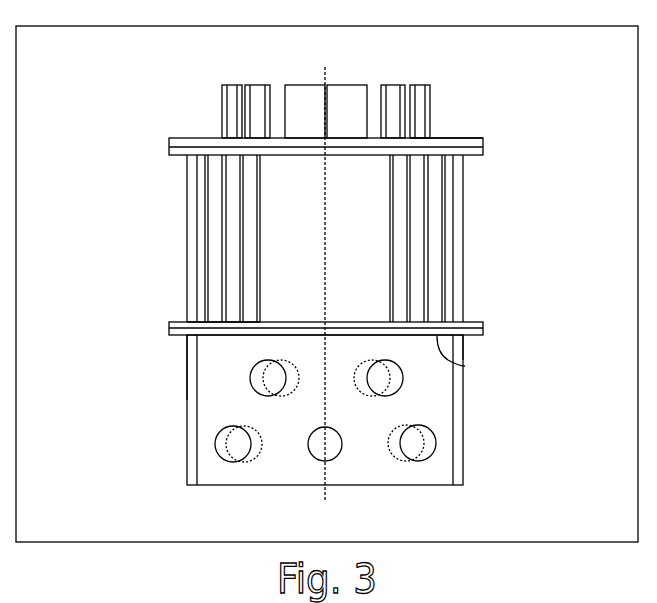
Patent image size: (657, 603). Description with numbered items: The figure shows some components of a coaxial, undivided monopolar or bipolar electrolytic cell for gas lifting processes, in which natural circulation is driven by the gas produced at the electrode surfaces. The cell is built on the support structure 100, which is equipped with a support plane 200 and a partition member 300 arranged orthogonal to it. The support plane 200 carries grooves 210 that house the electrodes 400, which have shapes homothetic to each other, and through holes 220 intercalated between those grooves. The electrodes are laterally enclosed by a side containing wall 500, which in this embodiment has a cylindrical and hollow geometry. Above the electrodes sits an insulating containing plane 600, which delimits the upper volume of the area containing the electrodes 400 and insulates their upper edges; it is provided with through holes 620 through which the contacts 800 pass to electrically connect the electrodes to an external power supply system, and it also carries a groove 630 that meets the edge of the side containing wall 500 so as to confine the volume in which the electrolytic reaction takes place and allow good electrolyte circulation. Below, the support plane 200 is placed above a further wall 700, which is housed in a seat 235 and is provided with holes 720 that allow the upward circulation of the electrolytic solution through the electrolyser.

The support structure 100 is at (174, 347).
The support plane 200 is at (168, 330).
The grooves 210 is at (225, 323).
The through holes 220 is at (465, 366).
The seat 235 is at (464, 341).
The partition member 300 is at (283, 183).
The electrodes 400 is at (430, 215).
The side containing wall 500 is at (468, 277).
The insulating containing plane 600 is at (483, 148).
The through holes 620 is at (438, 140).
The groove 630 is at (462, 148).
The further wall 700 is at (468, 453).
The holes 720 is at (224, 455).
The contacts 800 is at (222, 110).